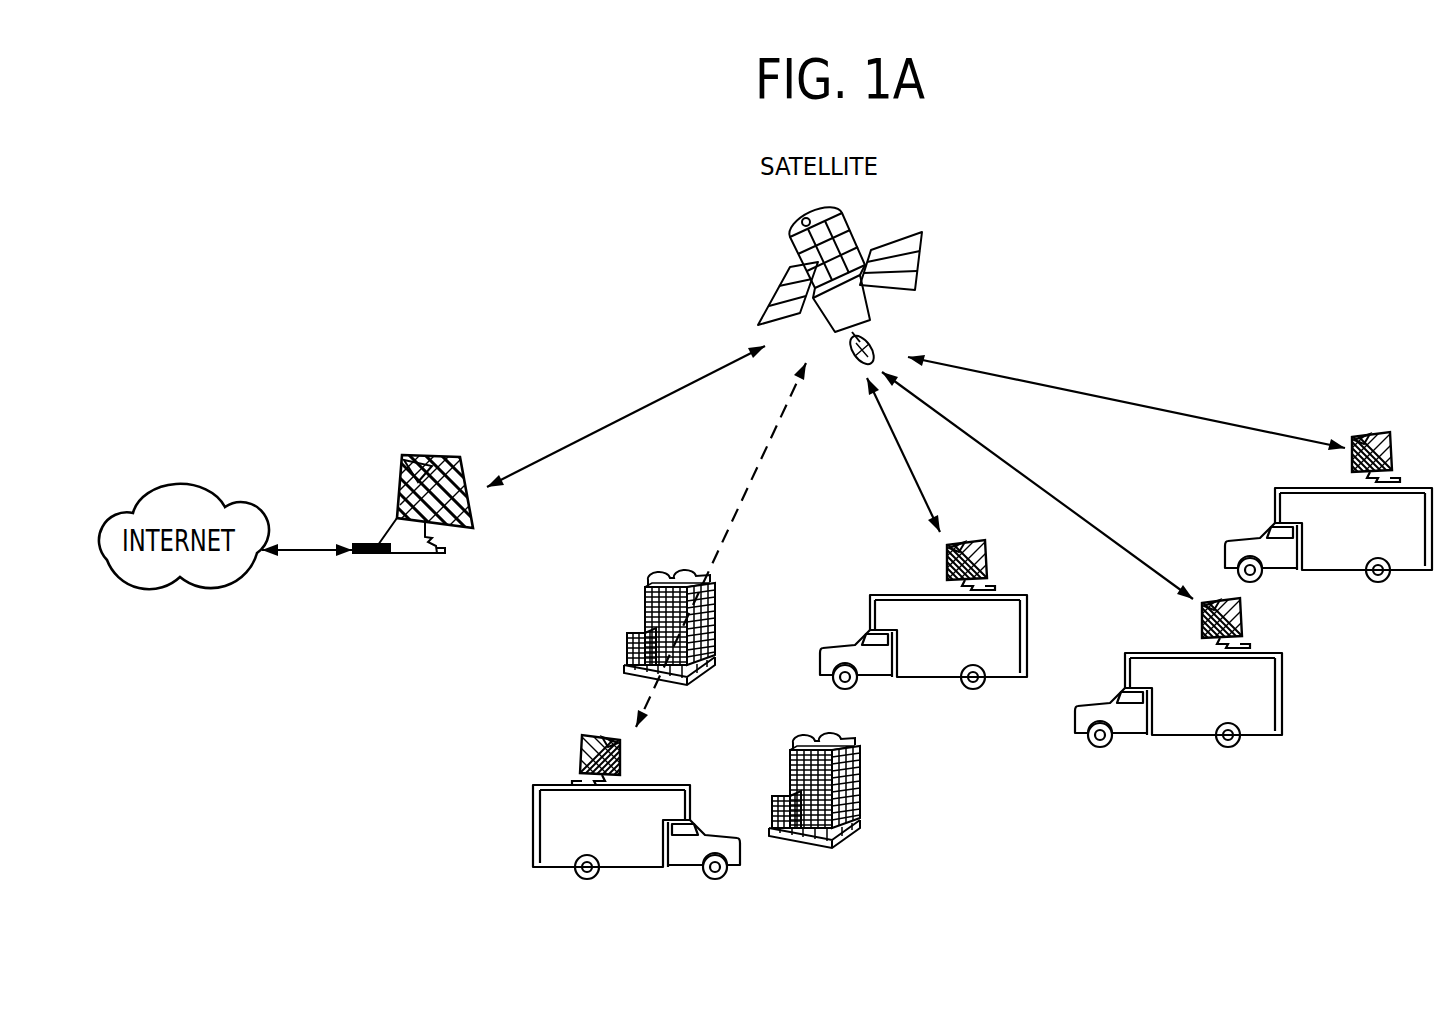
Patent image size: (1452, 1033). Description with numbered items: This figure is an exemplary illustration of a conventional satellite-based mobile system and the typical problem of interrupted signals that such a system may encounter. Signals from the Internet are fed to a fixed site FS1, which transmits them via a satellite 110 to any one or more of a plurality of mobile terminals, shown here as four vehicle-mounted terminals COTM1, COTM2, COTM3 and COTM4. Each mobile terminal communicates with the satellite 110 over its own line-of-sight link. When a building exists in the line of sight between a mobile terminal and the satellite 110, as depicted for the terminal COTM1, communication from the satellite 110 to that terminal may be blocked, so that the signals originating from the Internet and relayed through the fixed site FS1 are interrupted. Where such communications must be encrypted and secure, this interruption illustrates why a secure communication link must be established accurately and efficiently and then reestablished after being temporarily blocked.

The satellite 110 is at (840, 260).
The fixed site FS1 is at (428, 517).
The mobile terminal COTM1 is at (636, 807).
The mobile terminal COTM2 is at (924, 614).
The mobile terminal COTM3 is at (1179, 672).
The mobile terminal COTM4 is at (1329, 507).